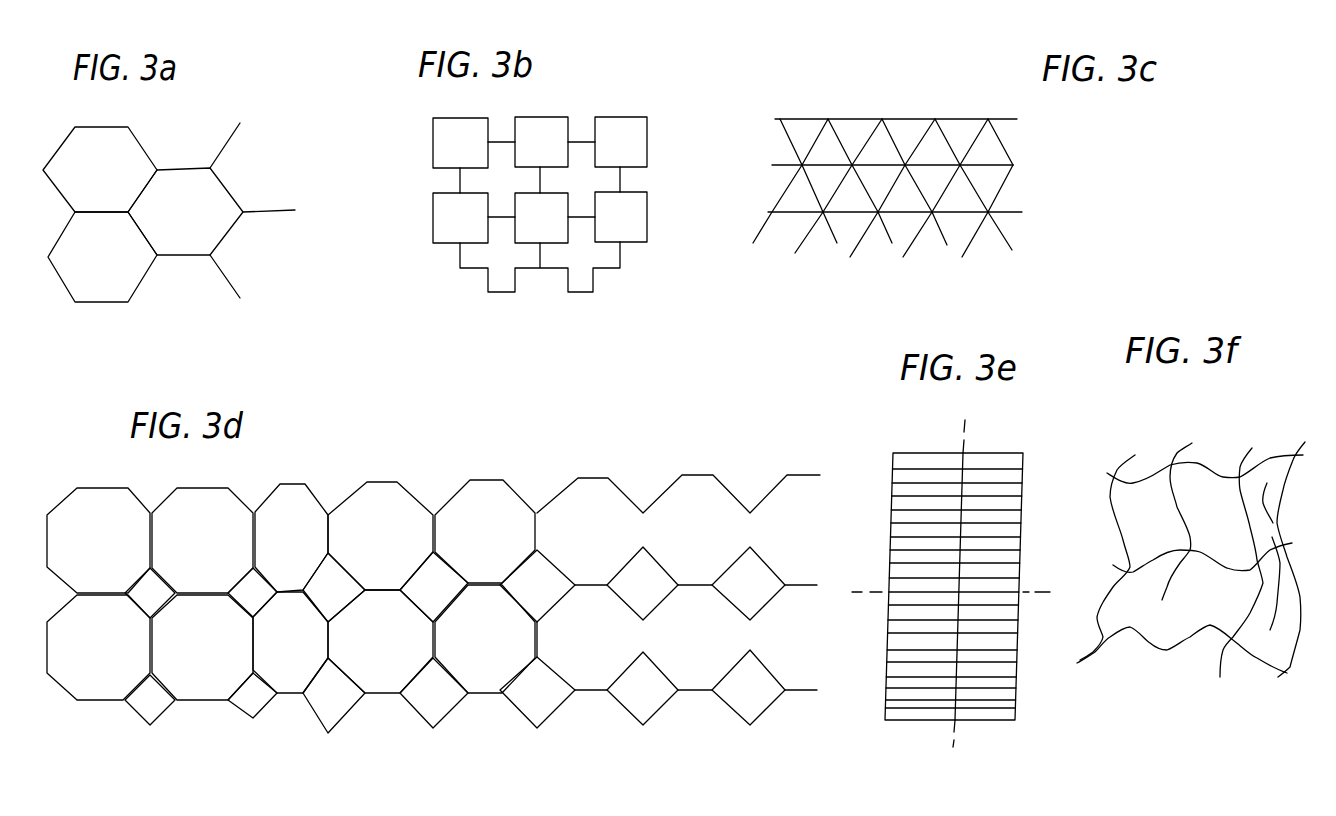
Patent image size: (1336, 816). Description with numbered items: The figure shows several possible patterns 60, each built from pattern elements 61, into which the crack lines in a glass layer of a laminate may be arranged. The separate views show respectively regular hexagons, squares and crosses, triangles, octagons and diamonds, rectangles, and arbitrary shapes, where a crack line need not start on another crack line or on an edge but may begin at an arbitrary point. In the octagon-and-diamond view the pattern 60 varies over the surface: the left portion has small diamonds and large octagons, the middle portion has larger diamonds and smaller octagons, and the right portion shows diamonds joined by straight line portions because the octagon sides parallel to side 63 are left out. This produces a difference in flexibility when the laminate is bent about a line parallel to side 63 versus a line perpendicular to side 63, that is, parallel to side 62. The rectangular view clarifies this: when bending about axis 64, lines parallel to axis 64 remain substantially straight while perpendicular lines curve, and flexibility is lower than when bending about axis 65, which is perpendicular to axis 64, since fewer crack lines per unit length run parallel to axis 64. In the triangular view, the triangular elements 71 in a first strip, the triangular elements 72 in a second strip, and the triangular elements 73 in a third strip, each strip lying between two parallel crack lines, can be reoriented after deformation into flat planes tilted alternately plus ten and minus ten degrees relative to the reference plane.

In FIG. 3A, the pattern 60 is at (299, 108).
In FIG. 3B, the pattern 60 is at (548, 102).
In FIG. 3C, the pattern 60 is at (961, 94).
In FIG. 3D, the pattern 60 is at (312, 457).
In FIG. 3E, the pattern 60 is at (941, 431).
In FIG. 3F, the pattern 60 is at (1139, 438).
In FIG. 3A, the pattern element 61 is at (162, 185).
In FIG. 3B, the pattern element 61 is at (600, 137).
In FIG. 3C, the pattern element 61 is at (828, 142).
In FIG. 3D, the pattern element 61 is at (422, 582).
In FIG. 3E, the pattern element 61 is at (917, 462).
In FIG. 3F, the pattern element 61 is at (1190, 493).
In FIG. 3D, the side 62 is at (485, 472).
In FIG. 3D, the side 63 is at (538, 527).
In FIG. 3E, the axis 64 is at (965, 428).
In FIG. 3E, the axis 65 is at (858, 592).
In FIG. 3C, the triangular elements 71 is at (1005, 142).
In FIG. 3C, the triangular elements 72 is at (1003, 197).
In FIG. 3C, the triangular elements 73 is at (1015, 240).